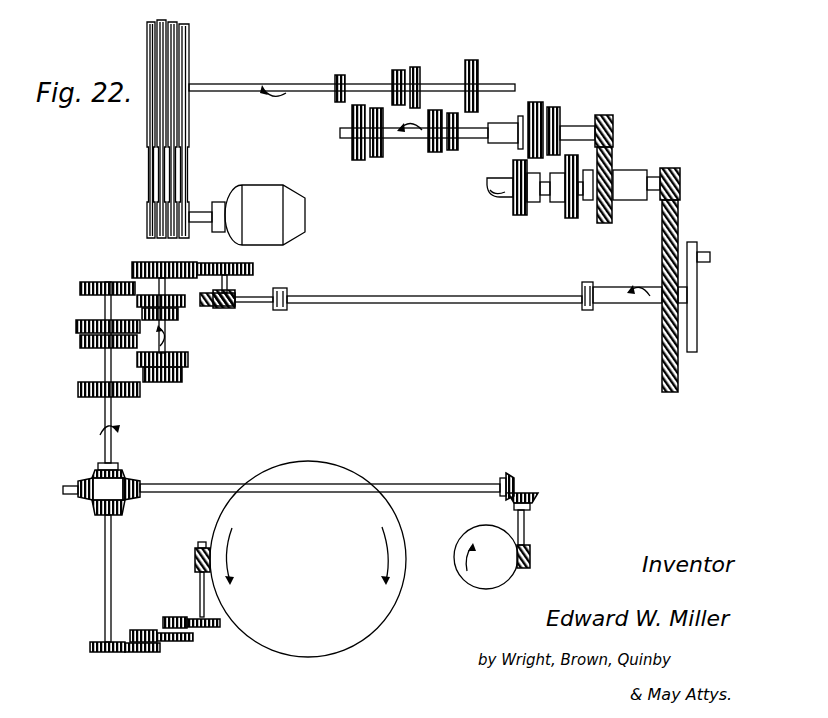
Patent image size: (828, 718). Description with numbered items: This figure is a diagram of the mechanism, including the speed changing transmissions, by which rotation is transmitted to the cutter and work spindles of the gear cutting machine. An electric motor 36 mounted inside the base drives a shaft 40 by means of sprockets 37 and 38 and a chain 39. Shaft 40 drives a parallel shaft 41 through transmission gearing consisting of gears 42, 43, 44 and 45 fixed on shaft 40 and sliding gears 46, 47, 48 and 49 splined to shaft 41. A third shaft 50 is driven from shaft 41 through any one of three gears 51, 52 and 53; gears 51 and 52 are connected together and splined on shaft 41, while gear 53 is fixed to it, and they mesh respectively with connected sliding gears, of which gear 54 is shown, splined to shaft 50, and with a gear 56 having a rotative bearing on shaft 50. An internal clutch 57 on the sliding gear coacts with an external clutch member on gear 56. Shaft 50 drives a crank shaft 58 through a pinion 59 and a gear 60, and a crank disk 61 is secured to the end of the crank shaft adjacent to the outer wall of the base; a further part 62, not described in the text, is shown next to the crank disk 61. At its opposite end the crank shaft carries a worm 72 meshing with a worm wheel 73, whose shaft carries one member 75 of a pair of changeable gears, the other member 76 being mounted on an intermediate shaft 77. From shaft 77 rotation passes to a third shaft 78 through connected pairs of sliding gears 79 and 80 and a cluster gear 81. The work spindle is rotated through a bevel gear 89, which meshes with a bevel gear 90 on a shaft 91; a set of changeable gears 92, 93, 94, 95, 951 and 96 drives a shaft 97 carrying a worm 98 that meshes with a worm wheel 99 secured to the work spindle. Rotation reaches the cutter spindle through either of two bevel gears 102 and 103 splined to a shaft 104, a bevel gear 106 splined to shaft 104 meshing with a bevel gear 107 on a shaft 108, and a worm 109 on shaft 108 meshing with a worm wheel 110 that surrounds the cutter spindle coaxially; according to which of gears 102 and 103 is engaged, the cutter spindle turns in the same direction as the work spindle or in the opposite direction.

The electric motor 36 is at (265, 202).
The sprocket 37 is at (207, 201).
The sprocket 38 is at (192, 129).
The chain 39 is at (197, 130).
The shaft 40 is at (352, 75).
The parallel shaft 41 is at (467, 141).
The gear 42 is at (355, 75).
The gear 43 is at (403, 71).
The gear 44 is at (430, 75).
The gear 45 is at (483, 73).
The sliding gear 46 is at (350, 155).
The sliding gear 47 is at (372, 159).
The sliding gear 48 is at (425, 156).
The sliding gear 49 is at (459, 150).
The third shaft 50 is at (490, 203).
The gear 51 is at (530, 113).
The gear 52 is at (568, 113).
The gear 53 is at (615, 115).
The sliding gear 54 is at (523, 203).
The gear 56 is at (601, 201).
The internal clutch 57 is at (568, 202).
The crank shaft 58 is at (474, 309).
The pinion 59 is at (649, 170).
The gear 60 is at (686, 295).
The crank disk 61 is at (707, 297).
The pin 62 is at (721, 245).
The worm 72 is at (233, 316).
The worm wheel 73 is at (261, 313).
The changeable gear 75 is at (243, 259).
The changeable gear 76 is at (147, 262).
The intermediate shaft 77 is at (181, 315).
The third shaft 78 is at (87, 372).
The sliding gears 79 is at (178, 313).
The sliding gears 80 is at (181, 374).
The cluster gear 81 is at (82, 339).
The bevel gear 89 is at (89, 465).
The bevel gear 90 is at (92, 508).
The shaft 91 is at (88, 578).
The changeable gear 92 is at (96, 664).
The changeable gear 93 is at (142, 666).
The changeable gear 94 is at (140, 617).
The changeable gear 95 is at (183, 653).
The changeable gear 951 is at (171, 606).
The changeable gear 96 is at (213, 638).
The shaft 97 is at (179, 586).
The worm 98 is at (195, 542).
The worm wheel 99 is at (308, 578).
The bevel gear 102 is at (59, 497).
The bevel gear 103 is at (151, 479).
The shaft 104 is at (323, 476).
The bevel gear 106 is at (521, 470).
The bevel gear 107 is at (540, 489).
The shaft 108 is at (550, 523).
The worm 109 is at (550, 556).
The worm wheel 110 is at (486, 573).